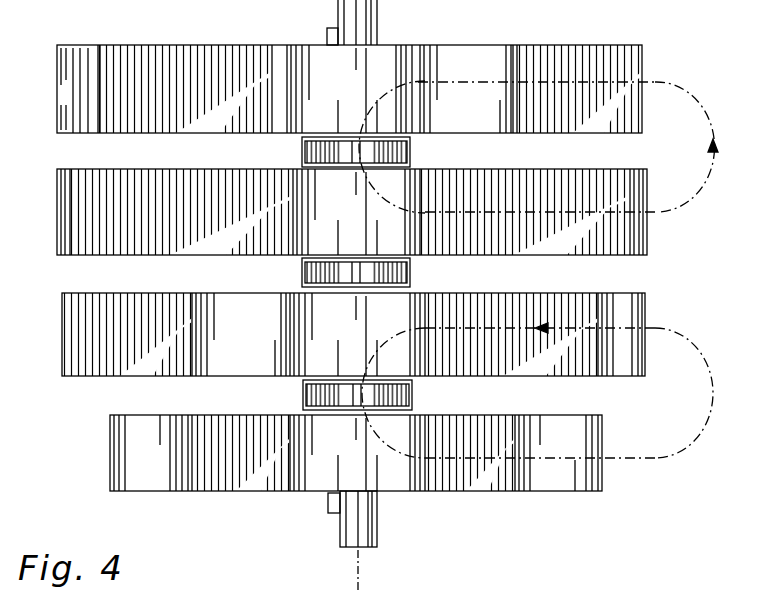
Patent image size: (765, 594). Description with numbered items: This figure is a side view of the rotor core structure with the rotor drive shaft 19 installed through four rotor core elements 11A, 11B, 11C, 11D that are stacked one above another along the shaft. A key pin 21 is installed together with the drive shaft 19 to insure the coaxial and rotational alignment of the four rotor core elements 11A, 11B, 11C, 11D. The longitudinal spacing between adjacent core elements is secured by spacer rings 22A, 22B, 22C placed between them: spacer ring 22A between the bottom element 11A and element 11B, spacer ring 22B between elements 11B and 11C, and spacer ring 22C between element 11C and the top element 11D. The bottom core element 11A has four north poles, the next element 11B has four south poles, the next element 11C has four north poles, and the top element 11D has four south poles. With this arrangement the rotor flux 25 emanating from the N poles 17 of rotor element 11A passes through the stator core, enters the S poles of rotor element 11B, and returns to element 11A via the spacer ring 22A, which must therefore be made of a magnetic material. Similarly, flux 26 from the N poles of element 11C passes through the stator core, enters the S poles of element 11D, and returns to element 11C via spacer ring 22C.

The bottom rotor core element 11A is at (645, 478).
The rotor core element 11B is at (672, 310).
The rotor core element 11C is at (665, 228).
The top rotor core element 11D is at (668, 50).
The north poles 17 is at (466, 50).
The rotor drive shaft 19 is at (376, 16).
The key pin 21 is at (328, 35).
The spacer ring 22A is at (413, 395).
The spacer ring 22B is at (412, 276).
The spacer ring 22C is at (412, 152).
The rotor flux 25 is at (697, 370).
The magnetic flux path 26 is at (700, 100).